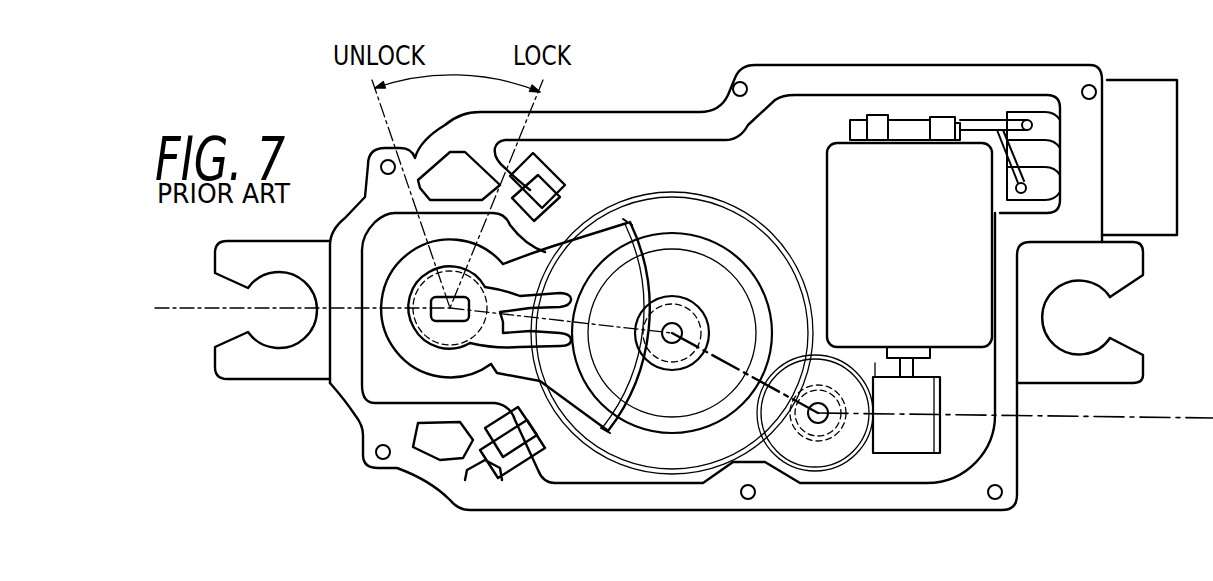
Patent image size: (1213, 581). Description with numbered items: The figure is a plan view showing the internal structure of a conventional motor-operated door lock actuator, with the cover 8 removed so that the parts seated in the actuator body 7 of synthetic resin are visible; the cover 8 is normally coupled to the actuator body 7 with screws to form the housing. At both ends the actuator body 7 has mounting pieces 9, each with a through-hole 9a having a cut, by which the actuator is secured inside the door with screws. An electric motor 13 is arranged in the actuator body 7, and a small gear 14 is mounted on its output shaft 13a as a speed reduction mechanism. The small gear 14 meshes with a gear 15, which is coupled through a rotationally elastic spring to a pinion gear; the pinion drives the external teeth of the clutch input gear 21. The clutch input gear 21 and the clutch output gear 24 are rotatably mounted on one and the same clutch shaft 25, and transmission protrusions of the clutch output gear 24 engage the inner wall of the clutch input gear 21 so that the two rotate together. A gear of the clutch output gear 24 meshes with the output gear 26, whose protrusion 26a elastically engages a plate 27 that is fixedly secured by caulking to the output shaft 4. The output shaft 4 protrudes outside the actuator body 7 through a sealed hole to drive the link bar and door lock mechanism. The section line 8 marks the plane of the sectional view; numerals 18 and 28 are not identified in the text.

The output shaft 4 is at (443, 317).
The actuator body 7 is at (993, 468).
The cover 8 is at (155, 305).
The mounting piece 9 is at (1113, 367).
The through-hole 9a is at (1090, 318).
The electric motor 13 is at (910, 160).
The output shaft of the motor 13a is at (917, 363).
The small gear 14 is at (913, 443).
The gear 15 is at (843, 457).
The pinion shaft 18 is at (817, 423).
The clutch input gear 21 is at (700, 455).
The clutch output gear 24 is at (663, 400).
The clutch shaft 25 is at (670, 327).
The output gear 26 is at (597, 403).
The protrusion 26a is at (542, 248).
The plate 27 is at (488, 288).
The stopper 28 is at (512, 432).